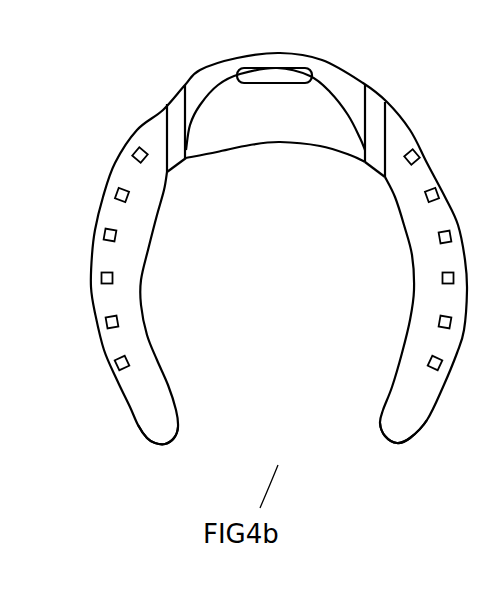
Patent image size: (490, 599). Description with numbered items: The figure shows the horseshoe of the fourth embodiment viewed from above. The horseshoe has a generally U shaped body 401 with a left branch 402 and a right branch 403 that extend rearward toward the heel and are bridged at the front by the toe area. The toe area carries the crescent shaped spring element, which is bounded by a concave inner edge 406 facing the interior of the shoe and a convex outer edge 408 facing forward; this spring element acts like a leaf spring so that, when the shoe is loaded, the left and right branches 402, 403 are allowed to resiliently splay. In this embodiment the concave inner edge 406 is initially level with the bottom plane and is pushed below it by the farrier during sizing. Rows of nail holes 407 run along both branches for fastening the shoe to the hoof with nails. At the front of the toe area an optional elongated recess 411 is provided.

The generally U shaped body 401 is at (115, 165).
The left branch 402 is at (172, 432).
The right branch 403 is at (382, 438).
The concave inner edge 406 is at (270, 145).
The nail holes 407 is at (100, 277).
The convex outer edge 408 is at (218, 85).
The elongated recess 411 is at (273, 72).